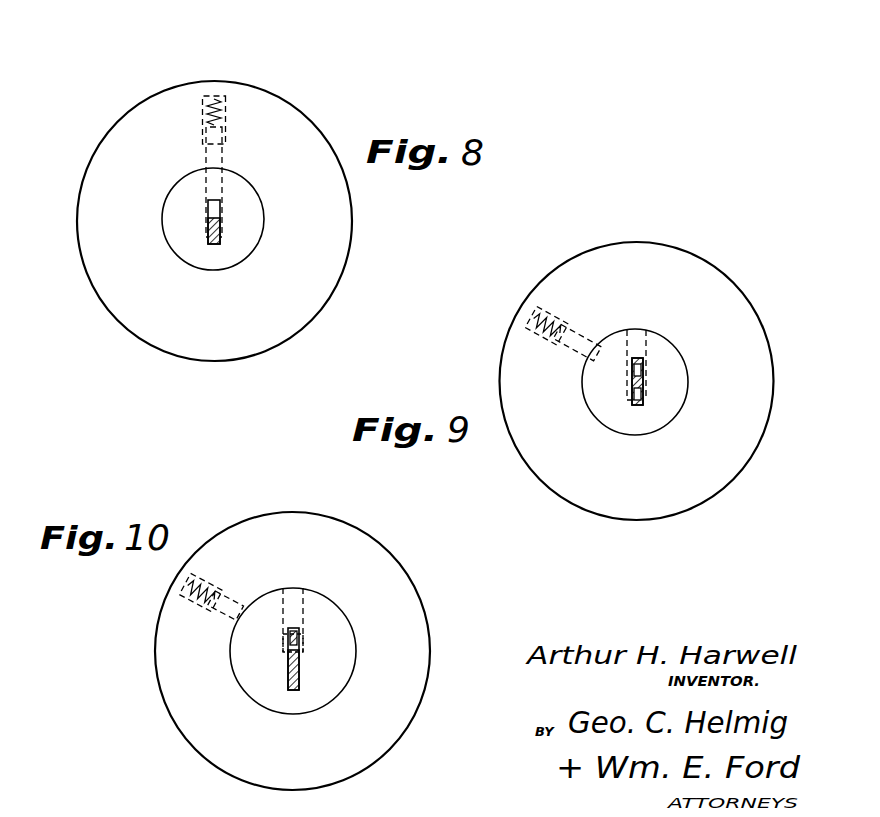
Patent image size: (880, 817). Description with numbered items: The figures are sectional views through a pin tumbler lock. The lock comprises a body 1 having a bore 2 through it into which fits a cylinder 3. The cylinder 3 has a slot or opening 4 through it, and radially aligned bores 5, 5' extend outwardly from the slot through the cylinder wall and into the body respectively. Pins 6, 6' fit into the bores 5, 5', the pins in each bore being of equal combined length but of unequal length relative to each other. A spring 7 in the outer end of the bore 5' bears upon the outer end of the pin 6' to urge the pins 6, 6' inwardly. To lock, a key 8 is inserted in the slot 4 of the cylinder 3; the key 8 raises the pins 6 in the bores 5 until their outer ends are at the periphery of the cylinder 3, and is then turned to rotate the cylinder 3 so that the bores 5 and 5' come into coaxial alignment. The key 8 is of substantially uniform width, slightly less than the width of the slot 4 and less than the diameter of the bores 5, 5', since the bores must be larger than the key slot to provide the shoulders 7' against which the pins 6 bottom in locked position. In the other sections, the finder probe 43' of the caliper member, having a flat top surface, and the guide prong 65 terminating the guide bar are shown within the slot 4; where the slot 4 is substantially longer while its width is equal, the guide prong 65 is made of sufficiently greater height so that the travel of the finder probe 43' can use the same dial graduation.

In FIG. 8, the body 1 is at (322, 130).
In FIG. 9, the body 1 is at (720, 482).
In FIG. 10, the body 1 is at (375, 752).
In FIG. 8, the bore 2 is at (265, 216).
In FIG. 9, the bore 2 is at (660, 426).
In FIG. 10, the bore 2 is at (357, 637).
In FIG. 8, the cylinder 3 is at (178, 199).
In FIG. 9, the cylinder 3 is at (600, 380).
In FIG. 10, the cylinder 3 is at (335, 673).
In FIG. 8, the slot or opening 4 is at (208, 236).
In FIG. 9, the slot or opening 4 is at (643, 381).
In FIG. 10, the slot or opening 4 is at (300, 664).
In FIG. 8, the bore 5 is at (265, 191).
In FIG. 9, the bore 5 is at (676, 326).
In FIG. 10, the bore 5 is at (340, 600).
In FIG. 8, the bore 5' is at (256, 136).
In FIG. 9, the bore 5' is at (585, 308).
In FIG. 10, the bore 5' is at (202, 654).
In FIG. 8, the pin 6 is at (262, 172).
In FIG. 9, the pin 6 is at (639, 343).
In FIG. 10, the pin 6 is at (314, 603).
In FIG. 8, the pin 6' is at (256, 153).
In FIG. 9, the pin 6' is at (608, 316).
In FIG. 10, the pin 6' is at (194, 634).
In FIG. 8, the spring 7 is at (225, 137).
In FIG. 9, the spring 7 is at (535, 332).
In FIG. 10, the spring 7 is at (186, 597).
In FIG. 8, the shoulder 7' is at (261, 235).
In FIG. 9, the shoulder 7' is at (596, 414).
In FIG. 8, the key 8 is at (215, 244).
In FIG. 9, the finder probe 43' is at (686, 360).
In FIG. 10, the finder probe 43' is at (278, 651).
In FIG. 9, the guide prong 65 is at (643, 396).
In FIG. 10, the guide prong 65 is at (300, 688).